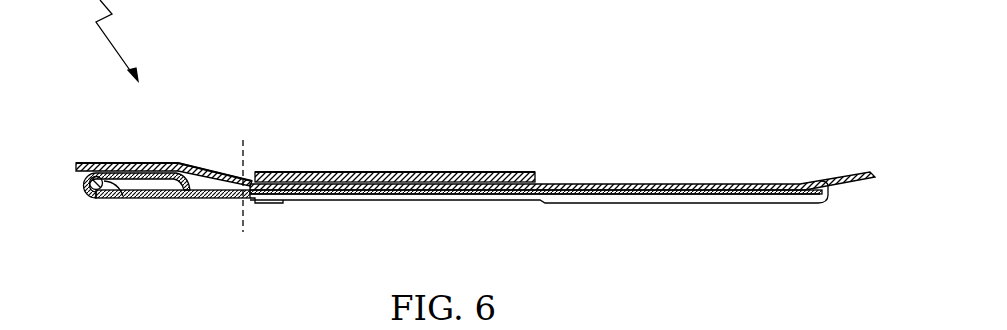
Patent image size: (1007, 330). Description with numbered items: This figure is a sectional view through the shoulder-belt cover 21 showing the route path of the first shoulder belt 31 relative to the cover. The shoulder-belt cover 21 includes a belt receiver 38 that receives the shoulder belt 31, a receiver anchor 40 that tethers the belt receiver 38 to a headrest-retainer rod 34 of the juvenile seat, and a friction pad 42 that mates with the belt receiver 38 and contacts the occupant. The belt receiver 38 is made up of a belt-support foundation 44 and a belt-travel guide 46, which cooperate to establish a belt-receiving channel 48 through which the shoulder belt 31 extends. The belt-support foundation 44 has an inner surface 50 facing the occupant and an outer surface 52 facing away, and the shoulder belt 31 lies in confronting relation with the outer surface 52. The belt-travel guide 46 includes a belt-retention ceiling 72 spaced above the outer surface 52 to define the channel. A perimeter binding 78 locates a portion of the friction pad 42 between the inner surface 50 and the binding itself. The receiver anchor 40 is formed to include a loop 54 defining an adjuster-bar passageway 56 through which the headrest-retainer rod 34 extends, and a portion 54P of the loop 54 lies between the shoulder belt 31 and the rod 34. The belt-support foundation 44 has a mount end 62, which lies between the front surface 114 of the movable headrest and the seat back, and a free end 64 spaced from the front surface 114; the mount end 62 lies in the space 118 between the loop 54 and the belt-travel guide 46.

The first shoulder-belt cover 21 is at (800, 308).
The first shoulder belt 31 is at (728, 182).
The headrest-retainer rod 34 is at (127, 198).
The belt receiver 38 is at (471, 172).
The receiver anchor 40 is at (147, 200).
The friction pad 42 is at (680, 200).
The belt-support foundation 44 is at (665, 191).
The belt-travel guide 46 is at (522, 168).
The belt-receiving channel 48 is at (478, 180).
The inner surface 50 is at (580, 196).
The outer surface 52 is at (618, 191).
The loop 54 is at (164, 225).
The portion of loop 54P is at (103, 165).
The adjuster-bar passageway 56 is at (160, 185).
The mount end 62 is at (244, 197).
The free end 64 is at (829, 189).
The belt-retention ceiling 72 is at (452, 170).
The perimeter binding 78 is at (290, 201).
The front surface 114 is at (245, 150).
The space 118 is at (221, 164).